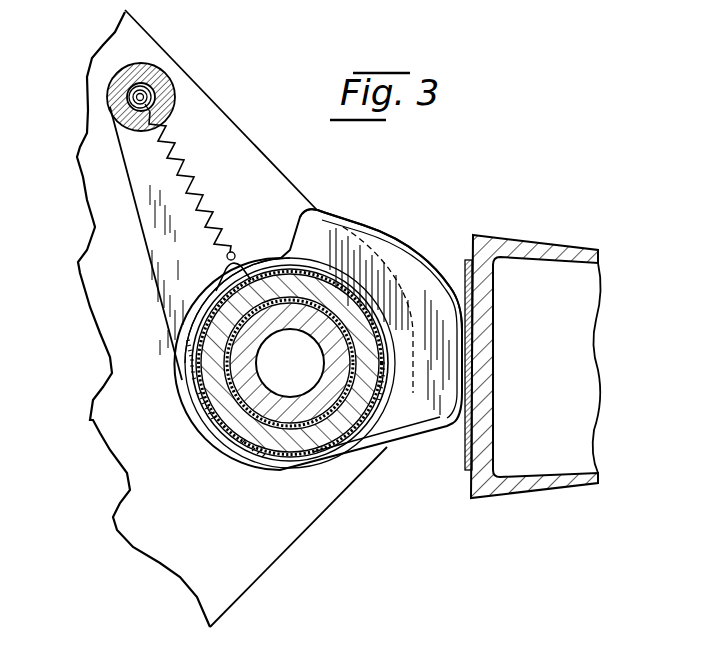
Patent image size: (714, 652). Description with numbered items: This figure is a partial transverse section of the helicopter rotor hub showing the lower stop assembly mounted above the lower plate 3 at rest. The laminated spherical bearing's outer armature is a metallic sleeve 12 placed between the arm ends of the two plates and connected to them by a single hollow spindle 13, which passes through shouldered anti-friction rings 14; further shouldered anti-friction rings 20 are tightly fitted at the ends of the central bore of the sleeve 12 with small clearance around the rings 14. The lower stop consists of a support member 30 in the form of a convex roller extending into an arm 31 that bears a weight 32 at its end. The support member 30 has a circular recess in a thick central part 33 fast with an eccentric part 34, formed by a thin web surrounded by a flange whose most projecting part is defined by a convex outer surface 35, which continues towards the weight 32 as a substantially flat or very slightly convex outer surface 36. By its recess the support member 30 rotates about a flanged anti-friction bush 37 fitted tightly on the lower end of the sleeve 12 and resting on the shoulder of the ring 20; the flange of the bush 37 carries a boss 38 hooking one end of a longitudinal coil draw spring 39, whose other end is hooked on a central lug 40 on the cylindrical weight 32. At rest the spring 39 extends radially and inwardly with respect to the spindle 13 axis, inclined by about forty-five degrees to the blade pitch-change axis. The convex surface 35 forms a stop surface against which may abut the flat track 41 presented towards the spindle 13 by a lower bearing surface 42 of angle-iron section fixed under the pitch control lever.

The lower plate 3 is at (280, 580).
The sleeve 12 is at (235, 445).
The spindle 13 is at (200, 437).
The shouldered anti-friction rings 14 is at (303, 430).
The shouldered anti-friction rings 20 is at (270, 437).
The support member 30 is at (343, 445).
The arm 31 is at (156, 236).
The weight 32 is at (117, 105).
The thick central part 33 is at (190, 400).
The eccentric part 34 is at (434, 390).
The convex outer surface 35 is at (450, 287).
The outer surface 36 is at (380, 230).
The flanged anti-friction bush 37 is at (210, 330).
The boss 38 is at (215, 282).
The coil draw spring 39 is at (170, 170).
The central lug 40 is at (130, 80).
The track 41 is at (460, 277).
The lower bearing surface 42 is at (485, 445).